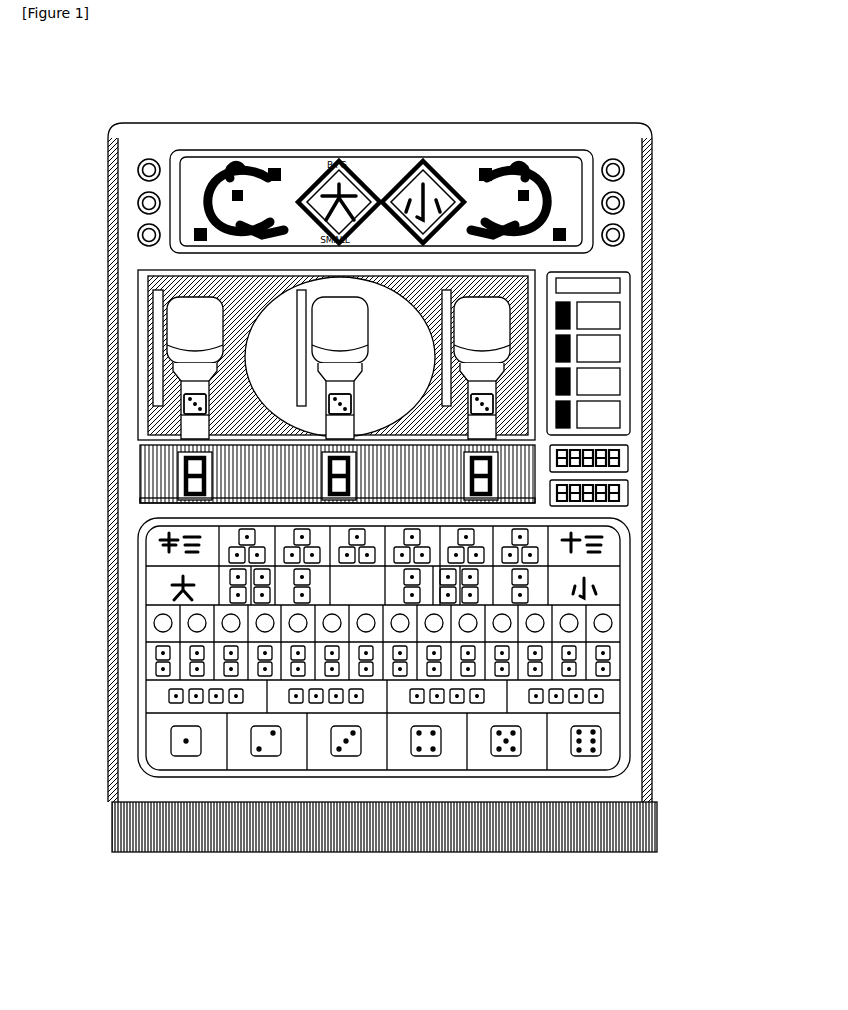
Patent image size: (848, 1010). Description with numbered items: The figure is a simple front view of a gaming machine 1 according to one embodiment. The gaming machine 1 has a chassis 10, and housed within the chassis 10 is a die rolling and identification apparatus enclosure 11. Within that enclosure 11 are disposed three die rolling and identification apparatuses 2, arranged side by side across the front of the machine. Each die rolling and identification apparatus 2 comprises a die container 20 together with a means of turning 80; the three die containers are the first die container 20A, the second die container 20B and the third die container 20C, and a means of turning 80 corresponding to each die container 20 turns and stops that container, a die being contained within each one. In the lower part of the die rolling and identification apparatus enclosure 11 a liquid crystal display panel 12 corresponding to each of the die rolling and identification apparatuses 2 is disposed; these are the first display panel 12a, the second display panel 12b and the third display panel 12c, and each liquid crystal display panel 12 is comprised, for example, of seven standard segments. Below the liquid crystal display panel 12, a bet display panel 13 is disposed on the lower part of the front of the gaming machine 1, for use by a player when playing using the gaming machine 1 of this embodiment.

The gaming machine 1 is at (664, 113).
The chassis 10 is at (653, 358).
The die rolling and identification apparatus enclosure 11 is at (100, 270).
The die container 20 is at (380, 265).
The No. 1 die container 20A is at (190, 306).
The No. 2 die container 20B is at (340, 305).
The No. 3 die container 20C is at (485, 305).
The die rolling and identification apparatus 2 is at (462, 432).
The liquid crystal display panel 12 is at (140, 466).
The No. 1 display panel 12a is at (180, 494).
The No. 2 display panel 12b is at (535, 513).
The No. 3 display panel 12c is at (632, 491).
The means of turning 80 is at (632, 455).
The bet display panel 13 is at (615, 698).